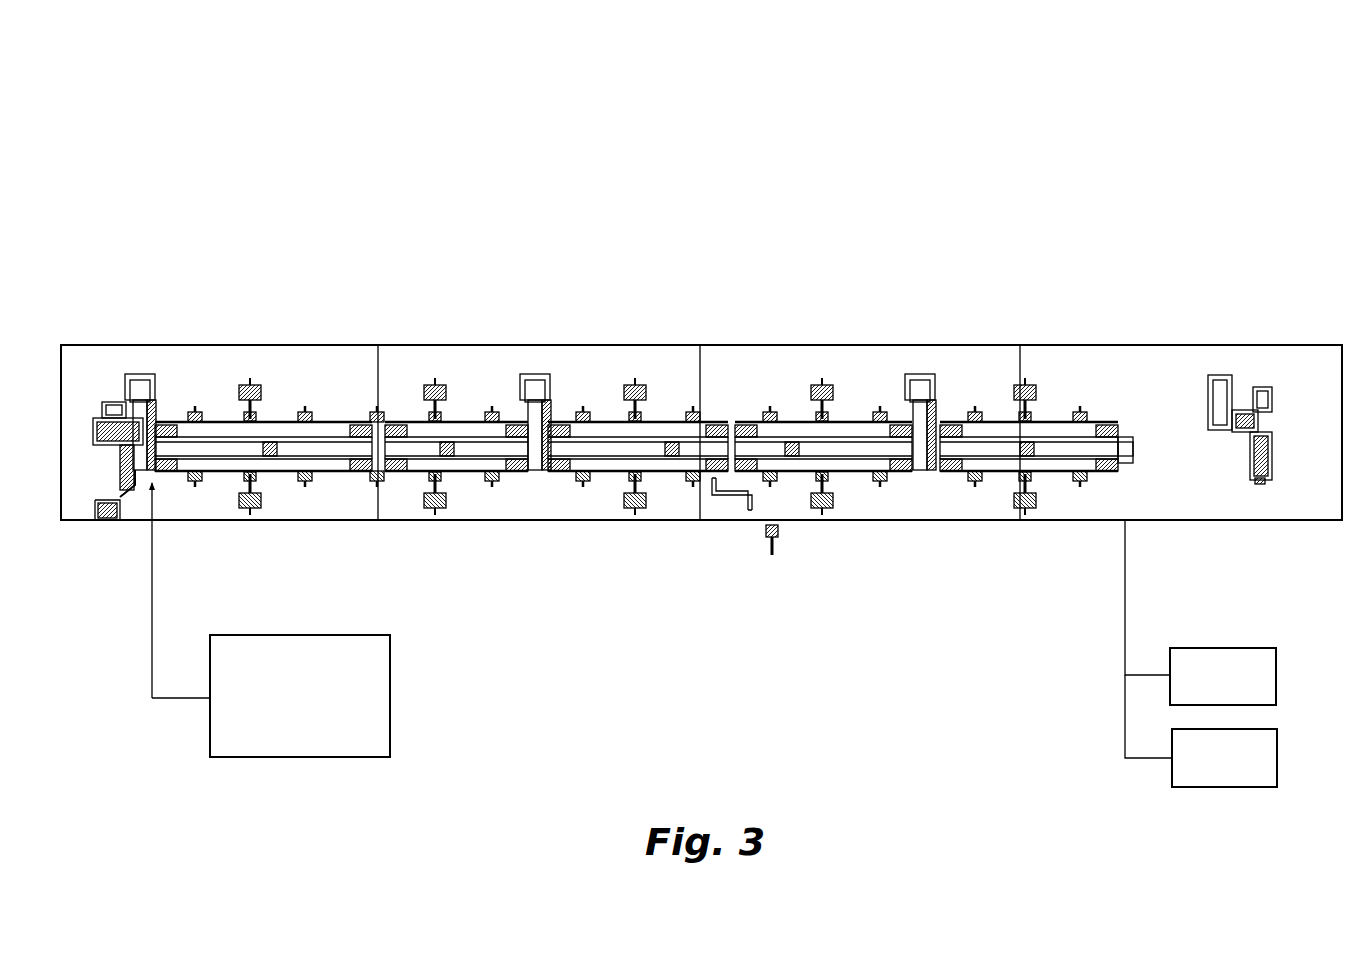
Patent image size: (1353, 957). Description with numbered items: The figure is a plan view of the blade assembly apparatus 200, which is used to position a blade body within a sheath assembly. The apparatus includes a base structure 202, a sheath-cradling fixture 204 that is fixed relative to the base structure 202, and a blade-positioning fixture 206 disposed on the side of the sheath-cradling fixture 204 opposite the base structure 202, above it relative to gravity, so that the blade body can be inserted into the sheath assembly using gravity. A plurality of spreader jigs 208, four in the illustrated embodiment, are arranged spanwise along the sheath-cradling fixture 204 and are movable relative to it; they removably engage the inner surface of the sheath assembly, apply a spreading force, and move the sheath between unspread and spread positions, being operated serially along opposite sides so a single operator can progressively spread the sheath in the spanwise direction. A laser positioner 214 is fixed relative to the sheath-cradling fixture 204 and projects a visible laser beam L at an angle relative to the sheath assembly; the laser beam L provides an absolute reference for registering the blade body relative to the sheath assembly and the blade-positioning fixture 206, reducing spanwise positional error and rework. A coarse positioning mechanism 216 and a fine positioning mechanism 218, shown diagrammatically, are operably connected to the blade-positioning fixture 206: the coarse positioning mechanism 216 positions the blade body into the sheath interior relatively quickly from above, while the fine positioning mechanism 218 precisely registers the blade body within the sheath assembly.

The blade assembly apparatus 200 is at (340, 168).
The base structure 202 is at (87, 490).
The sheath-cradling fixture 204 is at (540, 476).
The blade-positioning fixture 206 is at (546, 408).
The spreader jigs 208 is at (282, 404).
The laser positioner 214 is at (271, 620).
The coarse positioning mechanism 216 is at (1200, 612).
The fine positioning mechanism 218 is at (1201, 731).
The laser beam L is at (165, 486).